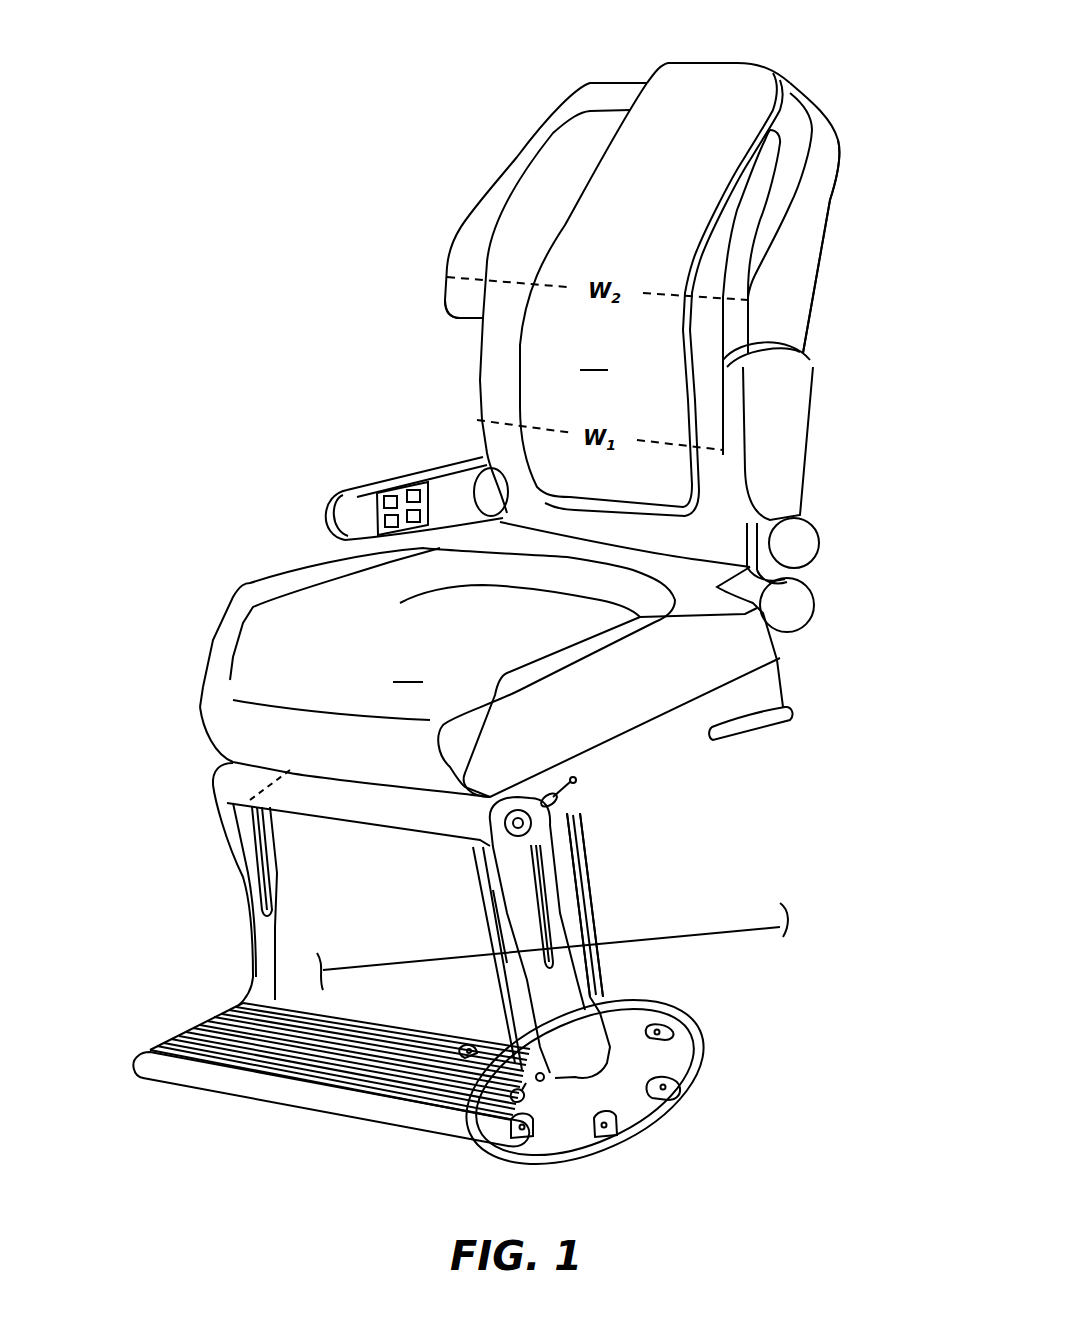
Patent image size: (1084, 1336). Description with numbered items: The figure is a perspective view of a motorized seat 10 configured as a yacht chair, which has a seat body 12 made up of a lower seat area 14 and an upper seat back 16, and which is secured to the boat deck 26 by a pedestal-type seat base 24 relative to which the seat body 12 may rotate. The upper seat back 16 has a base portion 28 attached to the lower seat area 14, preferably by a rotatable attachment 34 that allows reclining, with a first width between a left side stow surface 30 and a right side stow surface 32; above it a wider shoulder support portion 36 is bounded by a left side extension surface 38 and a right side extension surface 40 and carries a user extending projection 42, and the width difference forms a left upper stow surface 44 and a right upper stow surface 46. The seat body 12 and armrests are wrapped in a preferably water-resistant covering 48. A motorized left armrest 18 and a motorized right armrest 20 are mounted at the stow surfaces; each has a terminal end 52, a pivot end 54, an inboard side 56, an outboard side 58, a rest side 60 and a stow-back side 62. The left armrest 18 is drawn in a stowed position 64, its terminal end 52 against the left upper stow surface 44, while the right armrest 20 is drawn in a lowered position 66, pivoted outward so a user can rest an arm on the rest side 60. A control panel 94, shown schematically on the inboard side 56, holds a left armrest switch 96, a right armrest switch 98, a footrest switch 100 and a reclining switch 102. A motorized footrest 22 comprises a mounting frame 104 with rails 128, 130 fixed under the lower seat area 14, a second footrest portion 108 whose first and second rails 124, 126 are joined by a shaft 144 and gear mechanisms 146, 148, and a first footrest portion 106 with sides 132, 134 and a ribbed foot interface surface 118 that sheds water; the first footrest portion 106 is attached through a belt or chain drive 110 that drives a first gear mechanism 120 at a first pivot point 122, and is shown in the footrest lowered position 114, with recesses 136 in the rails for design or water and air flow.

The motorized seat 10 is at (853, 53).
The seat body 12 is at (743, 70).
The lower seat area 14 is at (439, 672).
The upper seat back 16 is at (651, 294).
The motorized left armrest 18 is at (797, 423).
The motorized right armrest 20 is at (461, 456).
The motorized footrest 22 is at (489, 865).
The seat base 24 is at (633, 1013).
The boat deck 26 is at (717, 940).
The base portion 28 is at (508, 447).
The left side stow surface 30 is at (733, 410).
The right side stow surface 32 is at (477, 393).
The rotatable attachment 34 is at (530, 193).
The shoulder support portion 36 is at (827, 174).
The left side extension surface 38 is at (790, 267).
The right side extension surface 40 is at (460, 230).
The user extending projection 42 is at (750, 240).
The left upper stow surface 44 is at (807, 367).
The right upper stow surface 46 is at (463, 318).
The covering 48 is at (687, 77).
The terminal end 52 is at (783, 347).
The pivot end 54 is at (807, 533).
The inboard side 56 is at (437, 478).
The outboard side 58 is at (787, 460).
The rest side 60 is at (810, 390).
The stow-back side 62 is at (743, 480).
The stowed position 64 is at (598, 442).
The lowered position 66 is at (334, 499).
The control panel 94 is at (377, 513).
The left armrest switch 96 is at (390, 498).
The right armrest switch 98 is at (413, 500).
The footrest switch 100 is at (390, 525).
The reclining switch 102 is at (413, 525).
The mounting frame 104 is at (650, 760).
The first footrest portion 106 is at (350, 1113).
The second footrest portion 108 is at (580, 957).
The belt or chain drive 110 is at (550, 800).
The footrest lowered position 114 is at (295, 1086).
The ribbed foot interface surface 118 is at (293, 1067).
The first gear mechanism 120 is at (548, 1078).
The first pivot point 122 is at (580, 1045).
The first rail 124 is at (247, 900).
The second rail 126 is at (530, 1003).
The rail of mounting portion 128 is at (272, 790).
The rail of mounting portion 130 is at (710, 727).
The side of first footrest portion 132 is at (160, 1052).
The side of first footrest portion 134 is at (443, 1132).
The recesses 136 is at (263, 860).
The shaft 144 is at (380, 823).
The gear mechanism 146 is at (222, 775).
The gear mechanism 148 is at (527, 827).